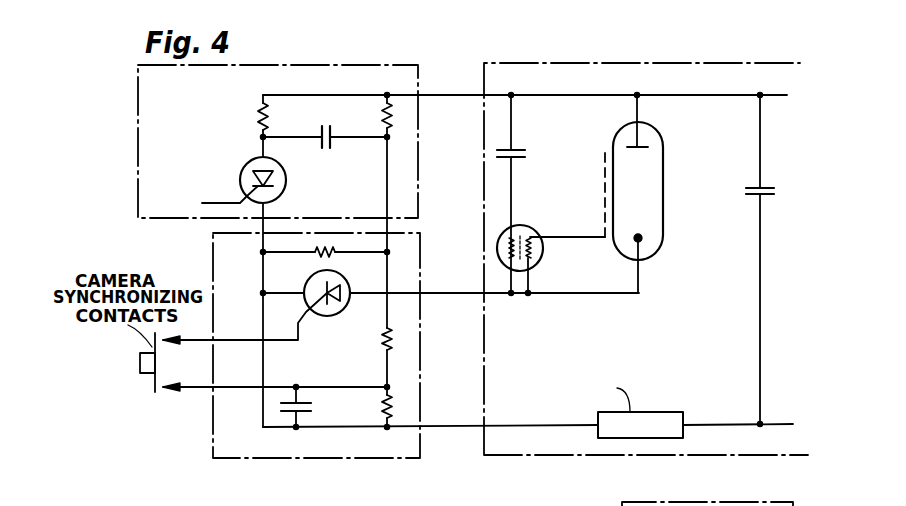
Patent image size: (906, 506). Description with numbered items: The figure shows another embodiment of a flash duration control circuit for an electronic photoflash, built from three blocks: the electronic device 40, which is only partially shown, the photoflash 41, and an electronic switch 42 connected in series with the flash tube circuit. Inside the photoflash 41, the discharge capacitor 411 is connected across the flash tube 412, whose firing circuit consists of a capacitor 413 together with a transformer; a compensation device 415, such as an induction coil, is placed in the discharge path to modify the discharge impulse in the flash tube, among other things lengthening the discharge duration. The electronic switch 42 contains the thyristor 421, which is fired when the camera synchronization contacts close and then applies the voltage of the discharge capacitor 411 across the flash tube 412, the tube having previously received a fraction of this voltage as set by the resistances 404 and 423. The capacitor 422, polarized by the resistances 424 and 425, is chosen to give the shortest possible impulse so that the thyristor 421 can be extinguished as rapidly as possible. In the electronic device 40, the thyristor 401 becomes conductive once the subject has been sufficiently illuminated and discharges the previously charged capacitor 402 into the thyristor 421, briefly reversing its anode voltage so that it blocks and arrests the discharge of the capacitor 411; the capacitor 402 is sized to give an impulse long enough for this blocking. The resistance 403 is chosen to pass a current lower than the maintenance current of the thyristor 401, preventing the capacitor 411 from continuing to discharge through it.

The electronic device 40 is at (136, 110).
The thyristor 401 is at (246, 168).
The capacitor 402 is at (330, 140).
The resistance 403 is at (258, 117).
The resistance 404 is at (393, 116).
The photoflash 41 is at (533, 457).
The discharge capacitor 411 is at (757, 197).
The flash tube 412 is at (628, 142).
The capacitor 413 is at (518, 158).
The compensation device 415 is at (657, 418).
The electronic switch 42 is at (400, 458).
The thyristor 421 is at (305, 298).
The capacitor 422 is at (310, 410).
The resistance 423 is at (312, 254).
The resistance 424 is at (395, 408).
The resistance 425 is at (395, 342).